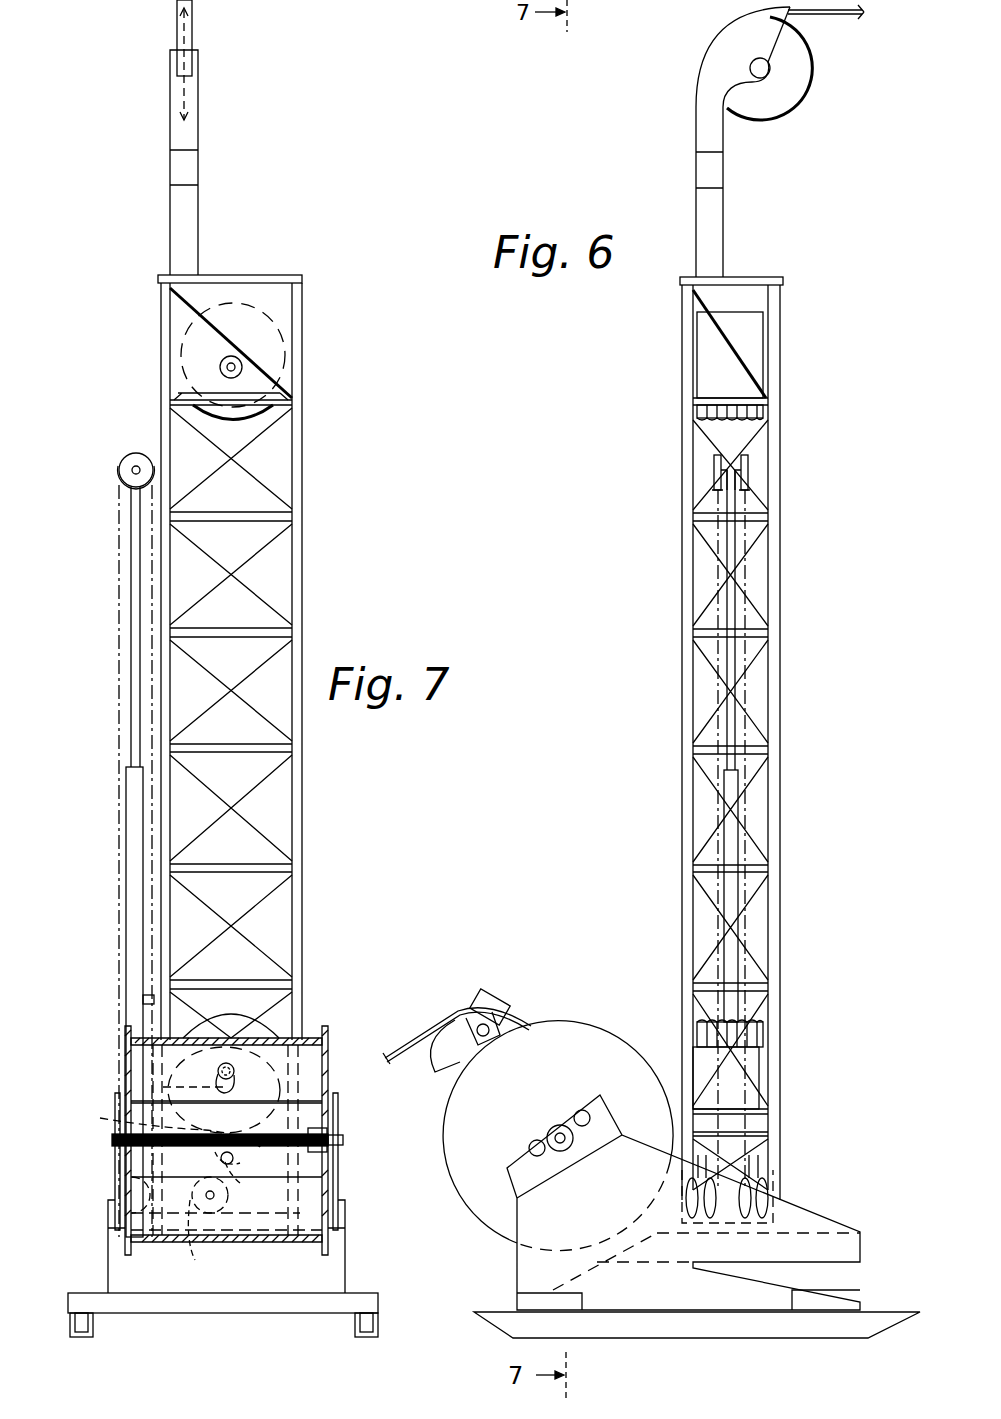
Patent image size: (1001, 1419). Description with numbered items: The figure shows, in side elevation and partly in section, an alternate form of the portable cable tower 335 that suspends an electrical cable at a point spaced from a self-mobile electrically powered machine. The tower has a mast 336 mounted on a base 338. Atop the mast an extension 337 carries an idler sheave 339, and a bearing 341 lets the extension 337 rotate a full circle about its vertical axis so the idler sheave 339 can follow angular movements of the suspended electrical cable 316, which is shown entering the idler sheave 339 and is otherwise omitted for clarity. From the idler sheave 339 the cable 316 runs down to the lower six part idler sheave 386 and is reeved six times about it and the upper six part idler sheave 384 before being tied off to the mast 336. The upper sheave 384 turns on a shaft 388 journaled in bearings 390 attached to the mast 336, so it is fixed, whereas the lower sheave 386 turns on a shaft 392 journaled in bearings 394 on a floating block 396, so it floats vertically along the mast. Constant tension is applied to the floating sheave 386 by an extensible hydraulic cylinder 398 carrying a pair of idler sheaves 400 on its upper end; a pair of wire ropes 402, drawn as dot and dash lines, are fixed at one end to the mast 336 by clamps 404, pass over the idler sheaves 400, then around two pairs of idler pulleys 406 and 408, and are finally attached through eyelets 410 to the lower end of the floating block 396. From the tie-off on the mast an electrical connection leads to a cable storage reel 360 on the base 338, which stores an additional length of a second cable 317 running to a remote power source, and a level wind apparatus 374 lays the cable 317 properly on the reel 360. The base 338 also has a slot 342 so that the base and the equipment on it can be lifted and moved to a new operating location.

In FIG. 6, the suspended electrical cable 316 is at (836, 20).
In FIG. 6, the second cable 317 is at (420, 1028).
In FIG. 7, the portable cable tower 335 is at (308, 809).
In FIG. 6, the portable cable tower 335 is at (783, 811).
In FIG. 7, the mast 336 is at (302, 558).
In FIG. 6, the mast 336 is at (780, 664).
In FIG. 7, the extension 337 is at (198, 122).
In FIG. 6, the extension 337 is at (696, 116).
In FIG. 7, the base 338 is at (322, 1280).
In FIG. 6, the base 338 is at (822, 1232).
In FIG. 7, the idler sheave 339 is at (194, 40).
In FIG. 6, the idler sheave 339 is at (798, 83).
In FIG. 7, the bearing 341 is at (198, 170).
In FIG. 6, the bearing 341 is at (723, 170).
In FIG. 6, the slot 342 is at (835, 1278).
In FIG. 6, the cable storage reel 360 is at (530, 1094).
In FIG. 6, the level wind apparatus 374 is at (490, 996).
In FIG. 7, the upper six part idler sheave 384 is at (268, 325).
In FIG. 6, the upper six part idler sheave 384 is at (745, 425).
In FIG. 7, the lower six part idler sheave 386 is at (260, 1028).
In FIG. 6, the lower six part idler sheave 386 is at (762, 1034).
In FIG. 7, the shaft 388 is at (227, 368).
In FIG. 7, the bearings 390 is at (222, 358).
In FIG. 7, the shaft 392 is at (150, 1064).
In FIG. 7, the bearings 394 is at (217, 1072).
In FIG. 7, the floating block 396 is at (160, 1126).
In FIG. 7, the extensible hydraulic cylinder 398 is at (126, 848).
In FIG. 7, the idler sheaves 400 is at (134, 452).
In FIG. 7, the wire ropes 402 is at (118, 726).
In FIG. 6, the wire ropes 402 is at (731, 830).
In FIG. 7, the clamps 404 is at (143, 999).
In FIG. 7, the idler pulleys 406 is at (150, 1245).
In FIG. 7, the idler pulleys 408 is at (225, 1215).
In FIG. 7, the eyelets 410 is at (236, 1158).